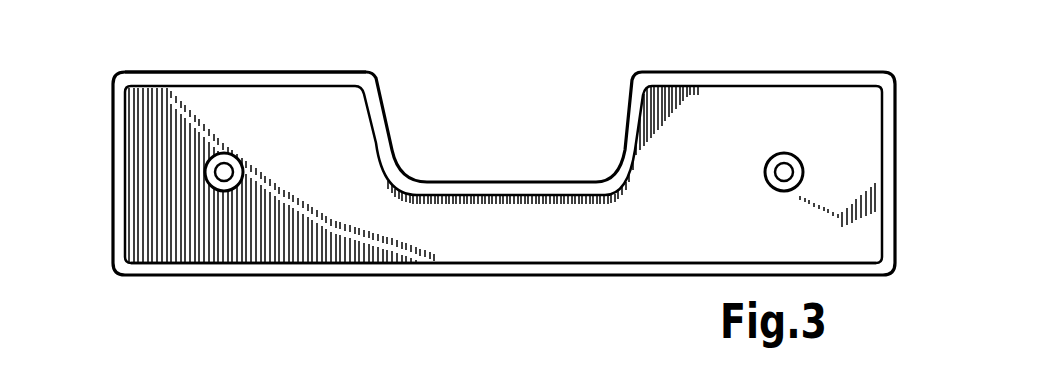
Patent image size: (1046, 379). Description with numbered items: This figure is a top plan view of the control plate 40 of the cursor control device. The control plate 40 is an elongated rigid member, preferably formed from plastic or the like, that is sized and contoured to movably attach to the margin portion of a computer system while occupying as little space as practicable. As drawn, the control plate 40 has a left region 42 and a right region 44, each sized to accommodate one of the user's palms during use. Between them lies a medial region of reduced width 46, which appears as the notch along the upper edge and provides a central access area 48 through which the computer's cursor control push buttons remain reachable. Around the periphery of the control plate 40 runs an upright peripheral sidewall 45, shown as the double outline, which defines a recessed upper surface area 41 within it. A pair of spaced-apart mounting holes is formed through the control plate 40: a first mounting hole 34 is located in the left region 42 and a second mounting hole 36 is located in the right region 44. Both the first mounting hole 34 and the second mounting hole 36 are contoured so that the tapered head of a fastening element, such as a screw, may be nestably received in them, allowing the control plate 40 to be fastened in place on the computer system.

The first mounting hole 34 is at (226, 170).
The second mounting hole 36 is at (786, 170).
The control plate 40 is at (259, 290).
The recessed upper surface area 41 is at (655, 236).
The left region 42 is at (163, 189).
The right region 44 is at (763, 117).
The upright peripheral sidewall 45 is at (287, 76).
The medial region of reduced width 46 is at (511, 249).
The central access area 48 is at (483, 138).